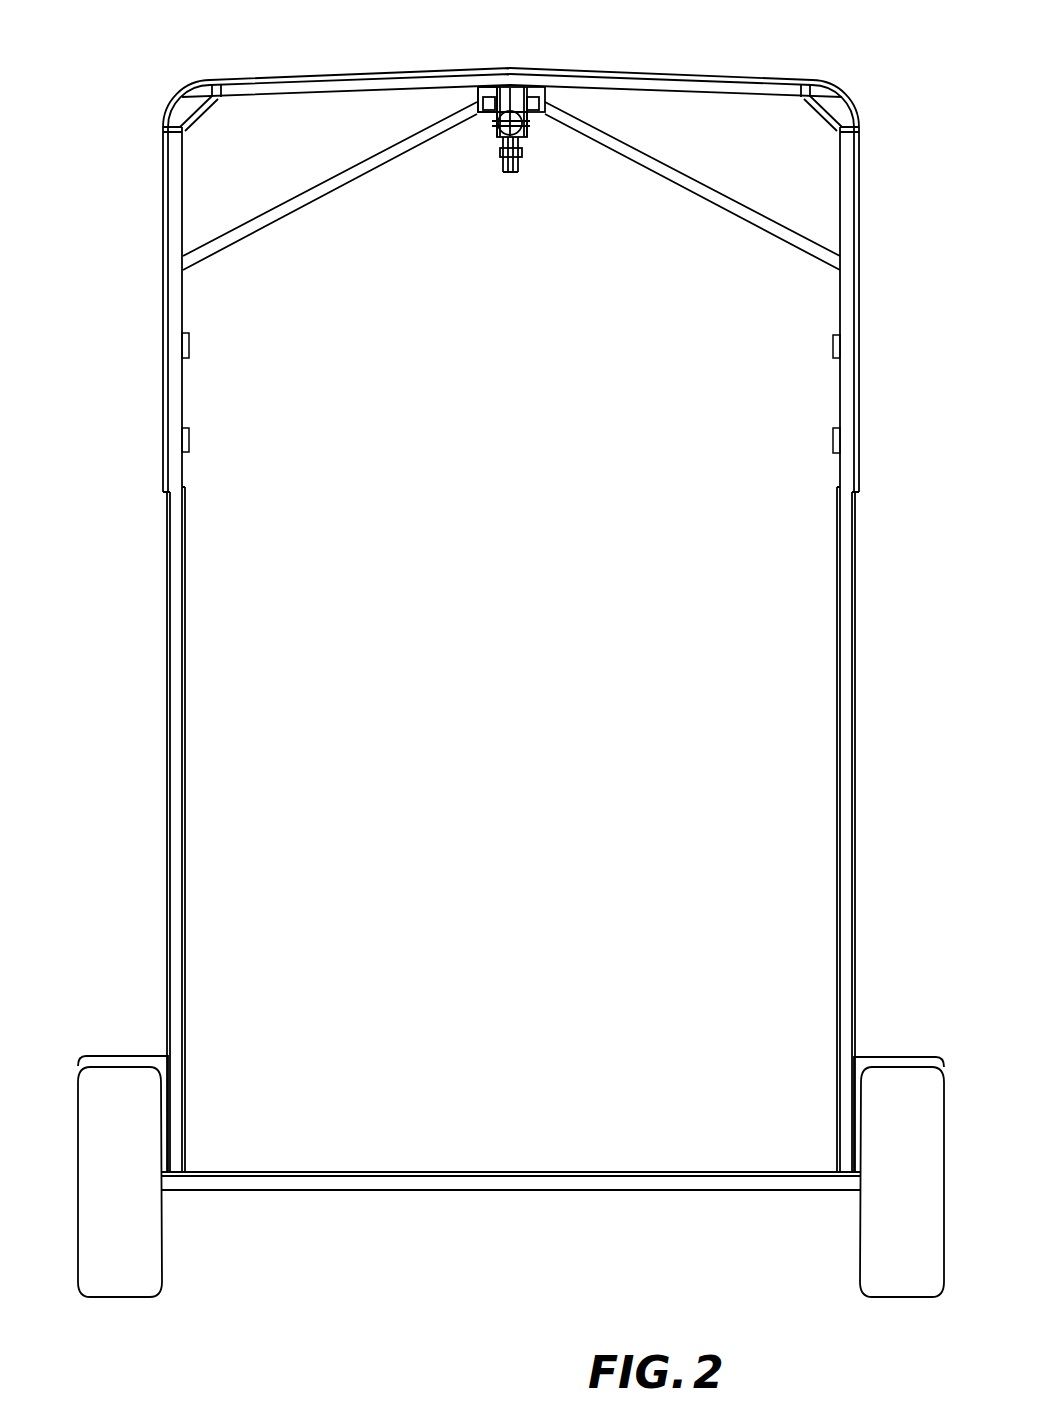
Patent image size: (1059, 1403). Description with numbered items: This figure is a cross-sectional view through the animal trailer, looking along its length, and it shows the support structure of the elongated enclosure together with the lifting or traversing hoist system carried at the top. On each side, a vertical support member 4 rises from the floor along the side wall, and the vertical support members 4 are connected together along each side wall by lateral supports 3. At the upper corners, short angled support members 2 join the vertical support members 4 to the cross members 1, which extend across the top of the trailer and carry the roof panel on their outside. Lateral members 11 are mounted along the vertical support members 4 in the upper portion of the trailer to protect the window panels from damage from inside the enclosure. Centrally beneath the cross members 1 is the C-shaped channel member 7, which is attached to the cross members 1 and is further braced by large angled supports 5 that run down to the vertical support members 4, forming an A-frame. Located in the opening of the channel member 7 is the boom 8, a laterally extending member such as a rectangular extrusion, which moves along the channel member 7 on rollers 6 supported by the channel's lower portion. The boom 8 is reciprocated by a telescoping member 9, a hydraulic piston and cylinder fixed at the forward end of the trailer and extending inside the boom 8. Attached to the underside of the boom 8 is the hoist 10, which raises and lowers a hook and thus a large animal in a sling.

The cross members 1 is at (253, 87).
The short angled support members 2 is at (192, 106).
The lateral supports 3 is at (180, 126).
The vertical support members 4 is at (182, 159).
The large angled supports 5 is at (247, 237).
The rollers 6 is at (488, 102).
The C-shaped channel member 7 is at (548, 88).
The boom 8 is at (528, 133).
The telescoping member 9 is at (512, 115).
The hoist 10 is at (500, 147).
The lateral members 11 is at (189, 441).